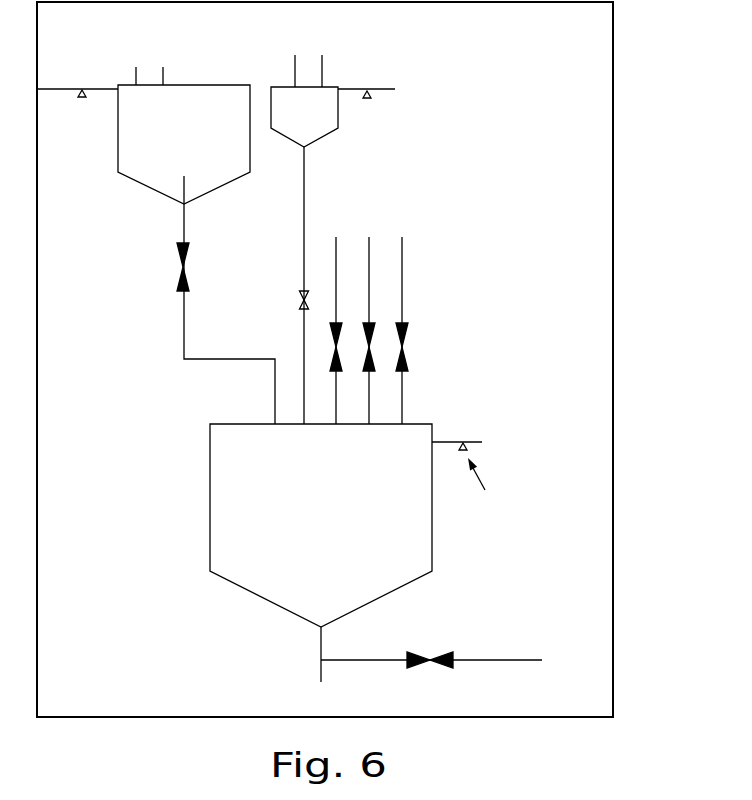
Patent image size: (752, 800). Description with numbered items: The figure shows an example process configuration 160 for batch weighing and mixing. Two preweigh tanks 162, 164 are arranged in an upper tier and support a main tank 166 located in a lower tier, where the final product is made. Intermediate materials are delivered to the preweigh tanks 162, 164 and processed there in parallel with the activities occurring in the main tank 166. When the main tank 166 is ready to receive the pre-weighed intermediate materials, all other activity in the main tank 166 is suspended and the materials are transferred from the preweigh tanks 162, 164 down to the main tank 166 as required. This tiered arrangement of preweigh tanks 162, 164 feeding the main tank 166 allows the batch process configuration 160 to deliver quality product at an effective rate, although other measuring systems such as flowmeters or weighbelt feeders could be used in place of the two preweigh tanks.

The example process configuration 160 is at (592, 69).
The preweigh tank 162 is at (150, 168).
The preweigh tank 164 is at (312, 128).
The main tank 166 is at (244, 568).